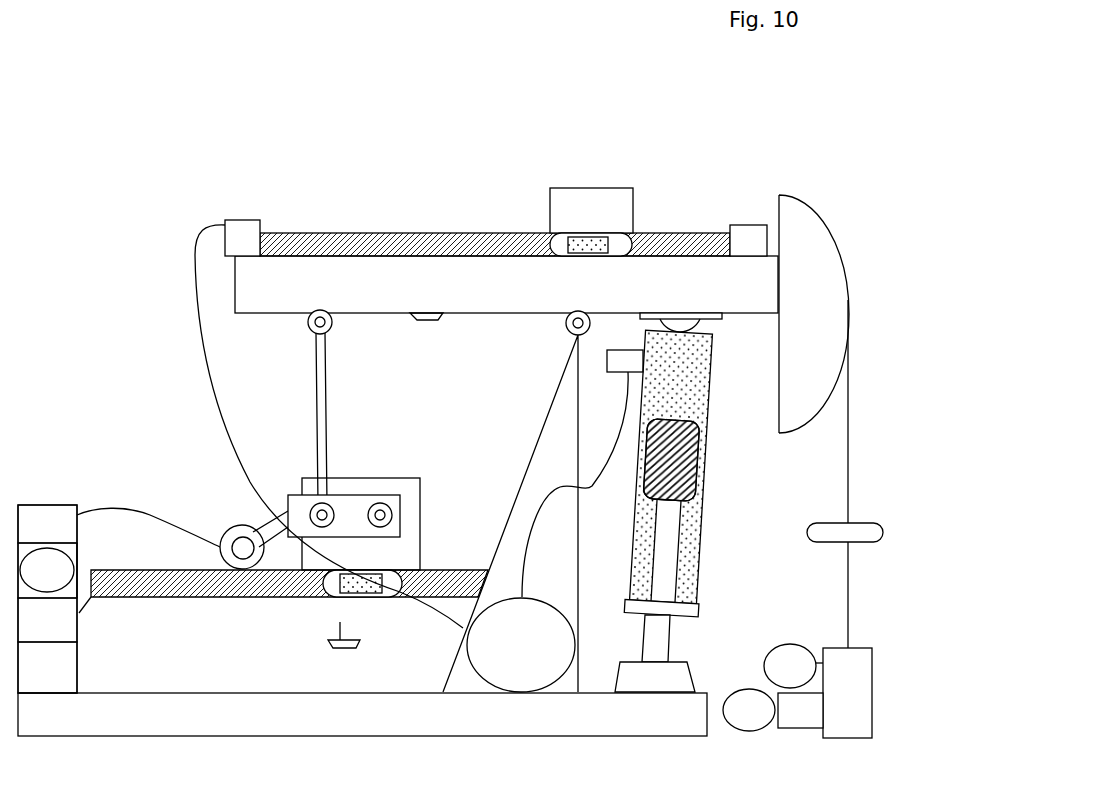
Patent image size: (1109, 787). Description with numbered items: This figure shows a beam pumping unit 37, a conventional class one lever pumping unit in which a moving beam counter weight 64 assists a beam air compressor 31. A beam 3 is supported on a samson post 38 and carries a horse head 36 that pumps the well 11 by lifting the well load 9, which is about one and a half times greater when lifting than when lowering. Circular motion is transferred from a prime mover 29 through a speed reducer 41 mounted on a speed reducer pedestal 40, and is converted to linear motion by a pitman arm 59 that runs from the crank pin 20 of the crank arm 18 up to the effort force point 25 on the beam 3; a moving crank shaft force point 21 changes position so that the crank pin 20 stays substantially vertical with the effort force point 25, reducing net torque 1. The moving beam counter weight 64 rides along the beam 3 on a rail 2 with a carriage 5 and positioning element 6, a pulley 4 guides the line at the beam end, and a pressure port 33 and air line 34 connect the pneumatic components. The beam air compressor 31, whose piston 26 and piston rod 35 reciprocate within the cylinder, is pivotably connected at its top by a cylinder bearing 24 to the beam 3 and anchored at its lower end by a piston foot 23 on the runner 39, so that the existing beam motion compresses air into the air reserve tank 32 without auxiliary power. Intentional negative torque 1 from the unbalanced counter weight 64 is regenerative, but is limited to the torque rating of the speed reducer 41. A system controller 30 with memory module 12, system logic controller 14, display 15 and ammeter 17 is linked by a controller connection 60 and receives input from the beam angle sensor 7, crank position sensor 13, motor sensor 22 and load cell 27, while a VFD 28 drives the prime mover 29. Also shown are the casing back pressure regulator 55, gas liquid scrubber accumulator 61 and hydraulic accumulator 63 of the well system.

The net torque 1 is at (435, 517).
The guide rail 2 is at (326, 217).
The beam 3 is at (240, 287).
The pulley 4 is at (570, 328).
The carriage 5 is at (377, 250).
The positioning element 6 is at (588, 250).
The beam angle sensor 7 is at (432, 341).
The well load 9 is at (873, 492).
The well 11 is at (834, 692).
The memory module 12 is at (70, 550).
The crank position sensor 13 is at (343, 624).
The system logic controller 14 is at (34, 632).
The display 15 is at (34, 582).
The ammeter 17 is at (34, 536).
The crank arm 18 is at (337, 525).
The crank pin 20 is at (318, 507).
The moving crank shaft force point 21 is at (375, 505).
The motor sensor 22 is at (243, 550).
The piston foot 23 is at (634, 689).
The cylinder bearing 24 is at (670, 322).
The effort force point 25 is at (312, 328).
The piston 26 is at (680, 465).
The load cell 27 is at (883, 533).
The VFD 28 is at (34, 680).
The prime mover 29 is at (229, 556).
The system controller 30 is at (46, 484).
The beam air compressor 31 is at (721, 542).
The air reserve tank 32 is at (508, 663).
The pressure port 33 is at (240, 238).
The air line 34 is at (200, 335).
The piston rod 35 is at (655, 637).
The horse head 36 is at (817, 277).
The beam pumping unit 37 is at (446, 157).
The samson post 38 is at (555, 410).
The runner 39 is at (392, 732).
The speed reducer pedestal 40 is at (244, 678).
The speed reducer 41 is at (406, 495).
The casing back pressure regulator 55 is at (787, 723).
The pitman arm 59 is at (317, 432).
The controller connection 60 is at (125, 507).
The gas liquid scrubber accumulator 61 is at (736, 722).
The hydraulic accumulator 63 is at (777, 678).
The moving beam counter weight 64 is at (562, 208).